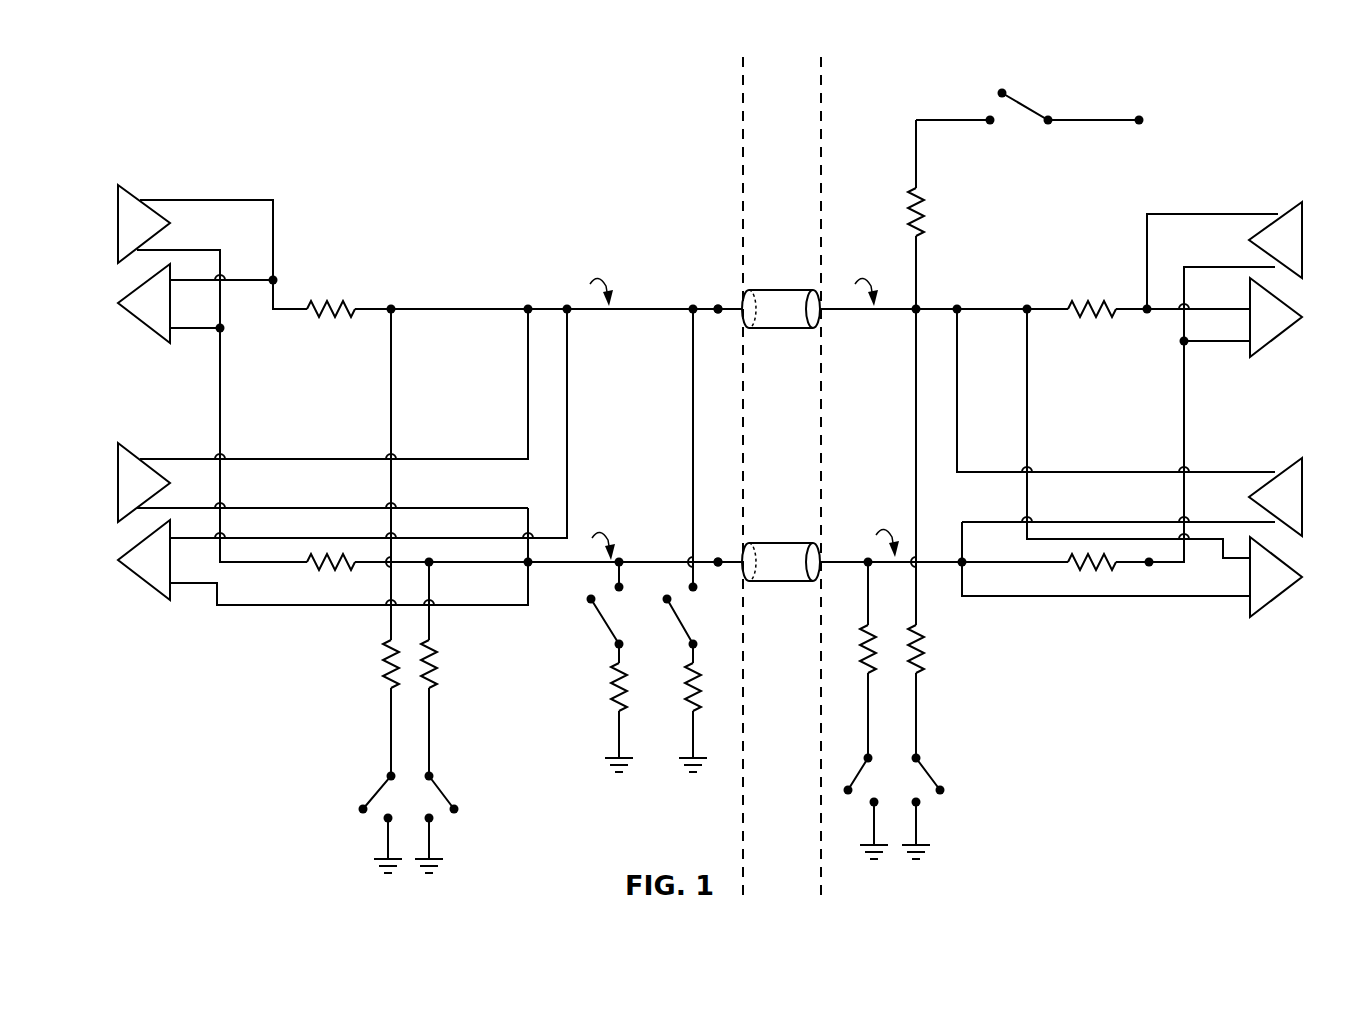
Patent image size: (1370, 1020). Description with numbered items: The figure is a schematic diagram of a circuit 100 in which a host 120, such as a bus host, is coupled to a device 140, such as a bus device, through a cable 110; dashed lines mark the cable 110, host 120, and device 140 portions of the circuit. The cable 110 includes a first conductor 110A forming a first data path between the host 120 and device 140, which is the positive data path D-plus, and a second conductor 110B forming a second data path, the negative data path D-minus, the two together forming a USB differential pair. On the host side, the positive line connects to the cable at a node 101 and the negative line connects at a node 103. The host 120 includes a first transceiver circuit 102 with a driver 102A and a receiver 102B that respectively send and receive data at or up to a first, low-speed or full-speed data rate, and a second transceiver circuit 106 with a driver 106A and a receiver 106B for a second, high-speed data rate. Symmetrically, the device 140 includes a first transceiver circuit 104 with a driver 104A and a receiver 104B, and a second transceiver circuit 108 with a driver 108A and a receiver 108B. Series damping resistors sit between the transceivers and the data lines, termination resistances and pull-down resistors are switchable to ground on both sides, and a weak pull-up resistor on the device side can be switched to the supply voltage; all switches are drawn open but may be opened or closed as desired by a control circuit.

The circuit 100 is at (200, 112).
The host-side D+ connection node 101 is at (719, 296).
The first transceiver circuit 102 is at (113, 185).
The driver 102A is at (157, 235).
The receiver 102B is at (170, 313).
The host-side D- connection node 103 is at (726, 580).
The first transceiver circuit 104 is at (1310, 202).
The driver 104A is at (1302, 248).
The receiver 104B is at (1290, 325).
The second transceiver circuit 106 is at (113, 442).
The driver 106A is at (157, 492).
The receiver 106B is at (170, 572).
The second transceiver circuit 108 is at (1310, 458).
The driver 108A is at (1302, 508).
The receiver 108B is at (1290, 585).
The cable 110 is at (807, 76).
The first conductor 110A is at (786, 289).
The second conductor 110B is at (786, 542).
The host 120 is at (525, 78).
The device 140 is at (1143, 80).